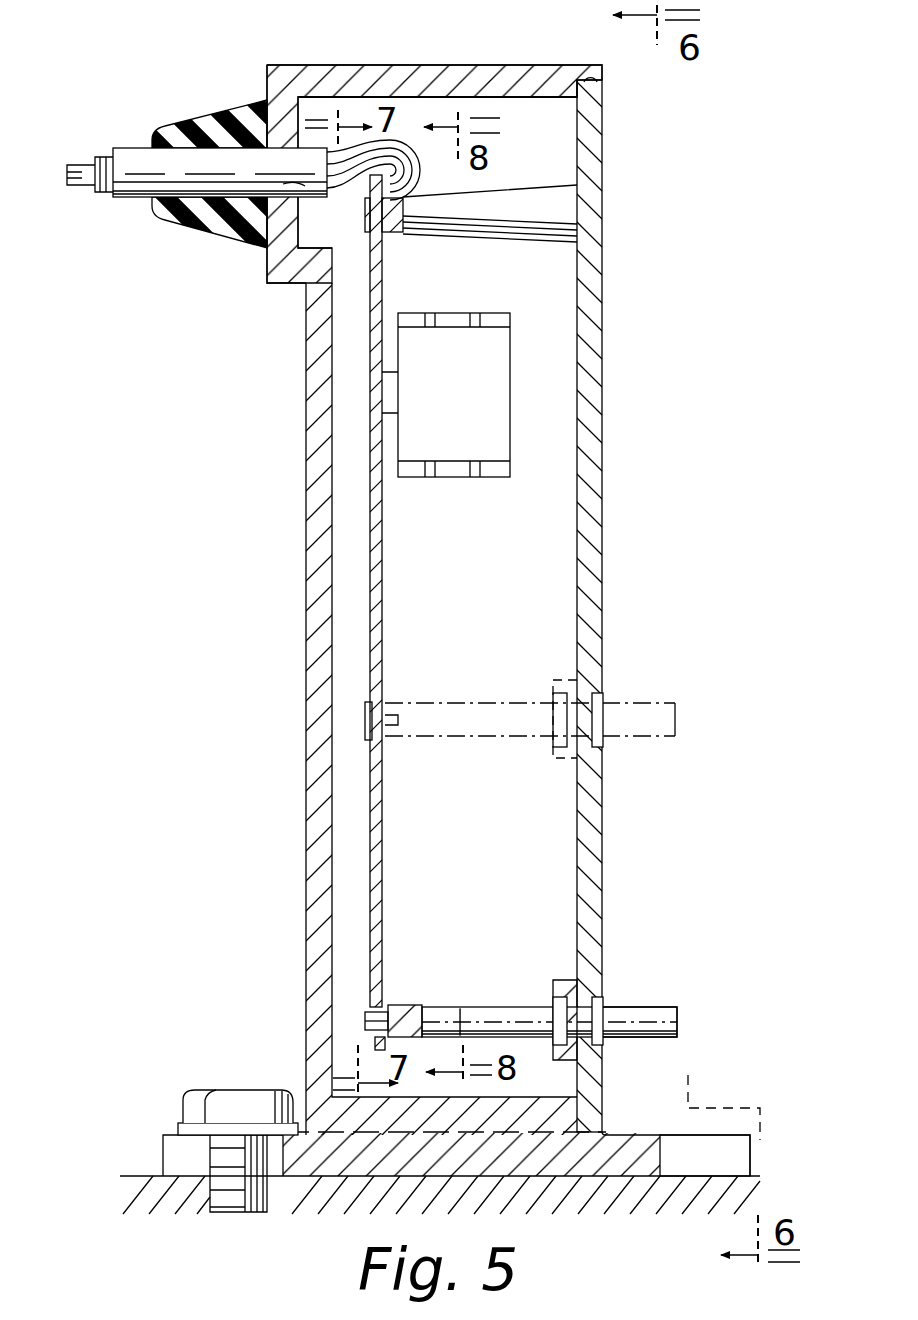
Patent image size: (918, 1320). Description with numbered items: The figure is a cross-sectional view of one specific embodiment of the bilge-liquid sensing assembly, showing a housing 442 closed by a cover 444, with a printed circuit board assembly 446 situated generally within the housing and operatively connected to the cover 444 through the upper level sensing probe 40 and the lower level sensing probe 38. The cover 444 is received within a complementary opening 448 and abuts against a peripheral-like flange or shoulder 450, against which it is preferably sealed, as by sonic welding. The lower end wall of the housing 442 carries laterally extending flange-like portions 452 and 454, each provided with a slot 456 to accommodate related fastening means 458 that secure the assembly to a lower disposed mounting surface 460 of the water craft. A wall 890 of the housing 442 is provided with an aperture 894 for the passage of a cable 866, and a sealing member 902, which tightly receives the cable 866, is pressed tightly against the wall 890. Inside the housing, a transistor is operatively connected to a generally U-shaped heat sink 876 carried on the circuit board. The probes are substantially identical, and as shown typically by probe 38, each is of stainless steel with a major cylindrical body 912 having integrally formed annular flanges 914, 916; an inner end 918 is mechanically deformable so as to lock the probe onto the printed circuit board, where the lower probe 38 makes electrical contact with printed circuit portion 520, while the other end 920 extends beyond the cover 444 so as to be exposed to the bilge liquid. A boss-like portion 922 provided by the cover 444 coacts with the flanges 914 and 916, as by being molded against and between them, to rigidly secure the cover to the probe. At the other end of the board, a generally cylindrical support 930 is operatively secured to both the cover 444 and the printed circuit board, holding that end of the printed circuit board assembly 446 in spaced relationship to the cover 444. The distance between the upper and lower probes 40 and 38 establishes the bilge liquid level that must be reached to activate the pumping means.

The lower level sensing probe 38 is at (518, 1002).
The upper level sensing probe 40 is at (628, 741).
The housing 442 is at (304, 711).
The cover 444 is at (598, 622).
The printed circuit board assembly 446 is at (388, 650).
The complementary opening 448 is at (597, 88).
The peripheral flange or shoulder 450 is at (578, 103).
The flange-like portion 452 is at (163, 1137).
The flange-like portion 454 is at (668, 1135).
The slot 456 is at (690, 1160).
The fastening means 458 is at (232, 1107).
The mounting surface 460 is at (143, 1175).
The printed circuit portion 520 is at (390, 1003).
The cable 866 is at (128, 146).
The heat sink 876 is at (478, 480).
The wall 890 is at (317, 490).
The aperture 894 is at (282, 192).
The sealing member 902 is at (214, 125).
The major cylindrical body 912 is at (465, 1015).
The annular flange 914 is at (553, 1000).
The annular flange 916 is at (603, 992).
The inner end 918 is at (365, 1018).
The other end 920 is at (660, 1018).
The boss-like portion 922 is at (557, 683).
The cylindrical support 930 is at (467, 222).